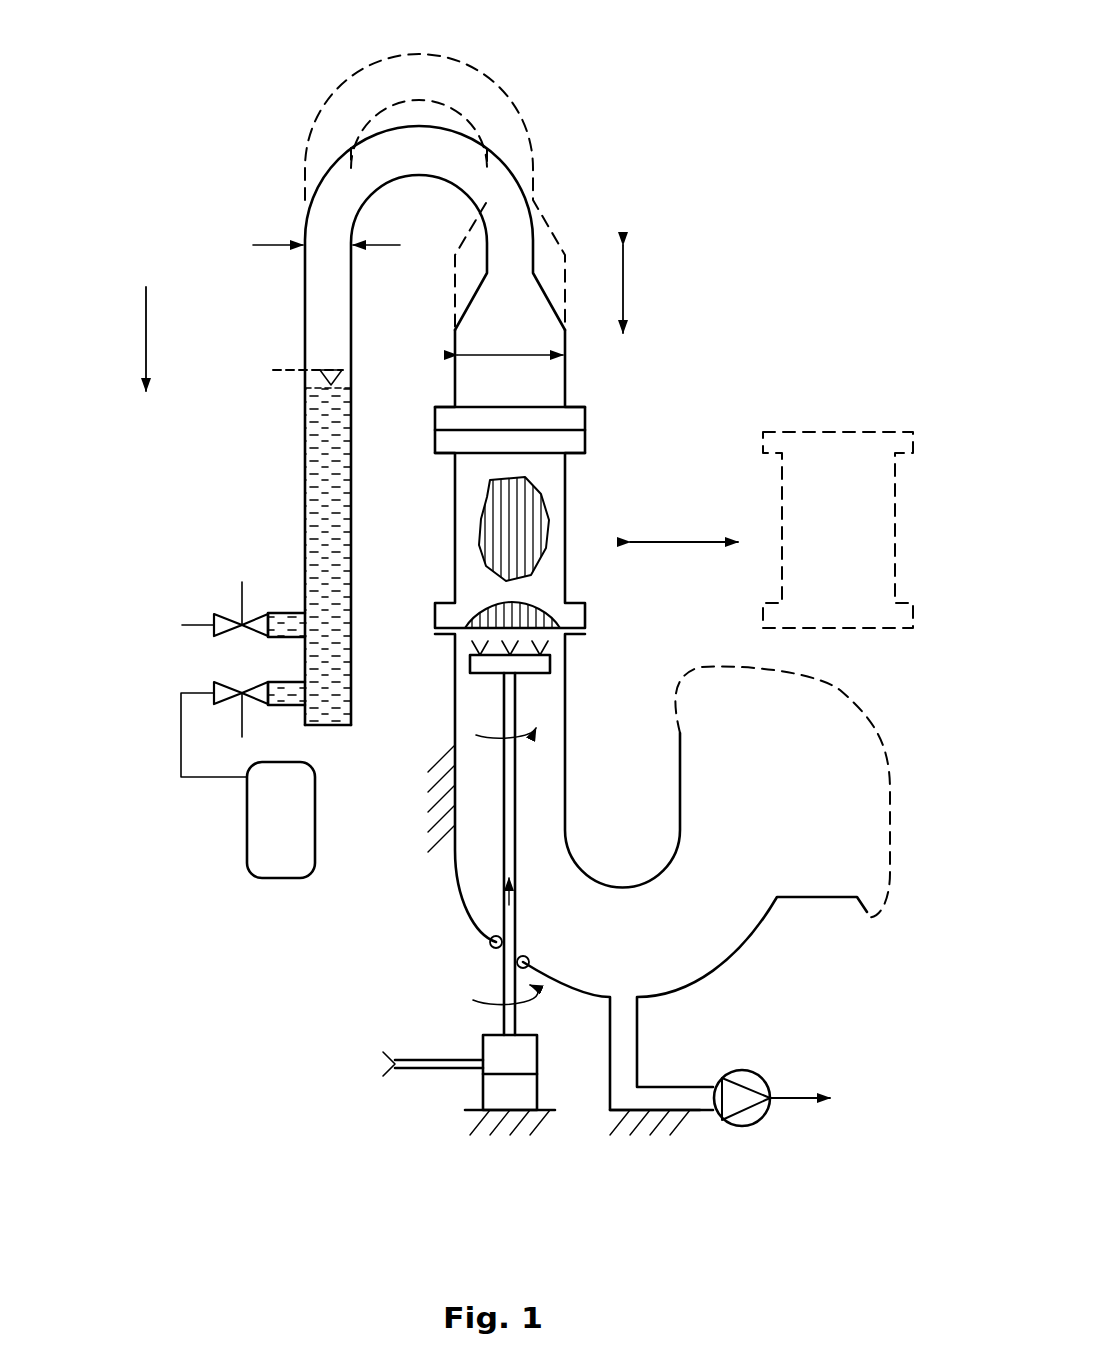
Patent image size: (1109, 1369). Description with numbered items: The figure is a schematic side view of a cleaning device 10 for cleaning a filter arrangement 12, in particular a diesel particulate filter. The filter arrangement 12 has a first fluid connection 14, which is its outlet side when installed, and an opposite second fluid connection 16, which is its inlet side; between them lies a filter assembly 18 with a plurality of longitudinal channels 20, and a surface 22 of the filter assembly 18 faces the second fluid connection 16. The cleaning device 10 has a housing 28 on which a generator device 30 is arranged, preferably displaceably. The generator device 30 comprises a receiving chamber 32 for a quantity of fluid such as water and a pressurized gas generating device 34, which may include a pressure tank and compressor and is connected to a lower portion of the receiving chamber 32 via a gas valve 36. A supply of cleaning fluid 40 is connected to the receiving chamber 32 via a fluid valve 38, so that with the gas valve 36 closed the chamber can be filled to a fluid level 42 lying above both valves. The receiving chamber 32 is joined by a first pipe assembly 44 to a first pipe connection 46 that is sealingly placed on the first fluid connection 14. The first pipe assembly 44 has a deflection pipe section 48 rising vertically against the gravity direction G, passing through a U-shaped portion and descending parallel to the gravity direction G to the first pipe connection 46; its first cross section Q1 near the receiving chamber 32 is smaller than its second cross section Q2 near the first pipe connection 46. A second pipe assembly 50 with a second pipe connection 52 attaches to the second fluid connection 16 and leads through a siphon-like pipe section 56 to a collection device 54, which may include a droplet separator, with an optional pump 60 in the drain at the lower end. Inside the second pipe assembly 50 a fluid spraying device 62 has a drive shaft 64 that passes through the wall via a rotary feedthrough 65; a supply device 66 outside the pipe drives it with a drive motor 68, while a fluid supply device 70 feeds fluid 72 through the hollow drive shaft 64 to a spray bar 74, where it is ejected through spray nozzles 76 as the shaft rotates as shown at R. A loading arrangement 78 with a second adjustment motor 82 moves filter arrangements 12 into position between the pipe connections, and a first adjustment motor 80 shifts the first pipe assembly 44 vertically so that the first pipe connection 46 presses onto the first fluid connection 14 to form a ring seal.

The cleaning device 10 is at (772, 72).
The filter arrangement 12 is at (582, 496).
The first fluid connection 14 is at (580, 447).
The second fluid connection 16 is at (580, 615).
The filter assembly 18 is at (505, 515).
The longitudinal channels 20 is at (505, 548).
The surface of the filter assembly 22 is at (460, 638).
The housing 28 is at (510, 1135).
The generator device 30 is at (234, 378).
The receiving chamber 32 is at (312, 542).
The pressurized gas generating device 34 is at (265, 852).
The gas valve 36 is at (228, 686).
The fluid valve 38 is at (228, 620).
The supply of cleaning fluid 40 is at (182, 625).
The fluid level 42 is at (278, 369).
The first pipe assembly 44 is at (212, 118).
The first pipe connection 46 is at (580, 418).
The deflection pipe section 48 is at (423, 126).
The second pipe assembly 50 is at (402, 925).
The second pipe connection 52 is at (565, 640).
The collection device 54 is at (896, 850).
The siphon-like pipe section 56 is at (722, 967).
The pump 60 is at (740, 1130).
The fluid spraying device 62 is at (486, 822).
The drive shaft 64 is at (512, 808).
The rotary feedthrough 65 is at (528, 957).
The supply device 66 is at (478, 1032).
The drive motor 68 is at (490, 1095).
The fluid supply device 70 is at (383, 1064).
The fluid 72 is at (516, 902).
The spray bar 74 is at (455, 716).
The spray nozzles 76 is at (470, 662).
The loading arrangement 78 is at (858, 362).
The first adjustment motor 80 is at (628, 290).
The second adjustment motor 82 is at (682, 540).
The gravity direction G is at (144, 335).
The first cross section Q1 is at (265, 243).
The second cross section Q2 is at (508, 354).
The rotation R is at (542, 742).